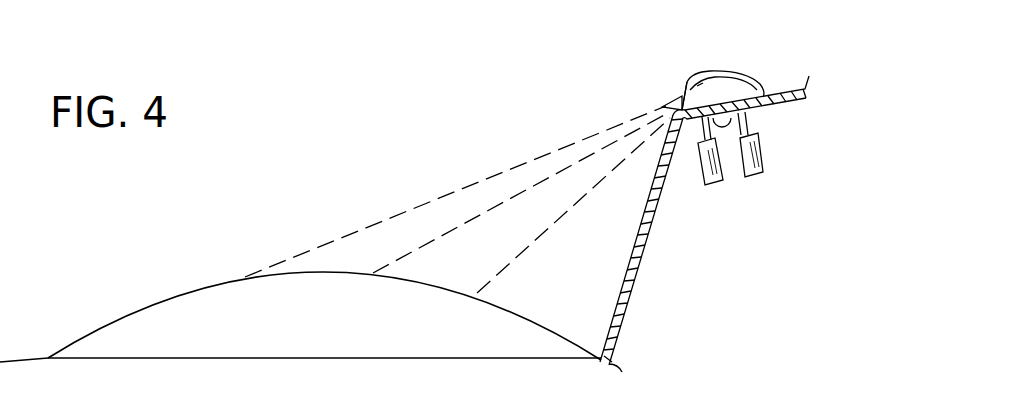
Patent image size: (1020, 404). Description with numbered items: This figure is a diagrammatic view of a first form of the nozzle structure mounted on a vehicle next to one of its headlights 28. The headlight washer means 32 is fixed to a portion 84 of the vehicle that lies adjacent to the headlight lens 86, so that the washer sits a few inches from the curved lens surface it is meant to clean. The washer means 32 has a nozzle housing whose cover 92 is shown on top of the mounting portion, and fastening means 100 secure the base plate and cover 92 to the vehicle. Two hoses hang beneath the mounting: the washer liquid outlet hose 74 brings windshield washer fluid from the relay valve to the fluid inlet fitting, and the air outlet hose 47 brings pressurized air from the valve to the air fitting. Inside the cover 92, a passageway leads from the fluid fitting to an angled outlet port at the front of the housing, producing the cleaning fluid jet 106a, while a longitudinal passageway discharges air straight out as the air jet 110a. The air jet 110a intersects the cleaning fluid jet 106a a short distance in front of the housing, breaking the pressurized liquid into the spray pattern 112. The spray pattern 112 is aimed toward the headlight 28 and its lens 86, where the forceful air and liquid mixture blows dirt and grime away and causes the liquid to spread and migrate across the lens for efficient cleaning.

The headlight 28 is at (172, 310).
The headlight lens 86 is at (125, 316).
The portion of the vehicle 84 is at (635, 275).
The headlight washer means 32 is at (736, 69).
The cover 92 is at (706, 75).
The cleaning fluid jet 106a is at (678, 95).
The air jet 110a is at (663, 102).
The spray pattern 112 is at (563, 212).
The washer liquid outlet hose 74 is at (704, 184).
The air outlet hose 47 is at (764, 160).
The fastening means 100 is at (724, 124).